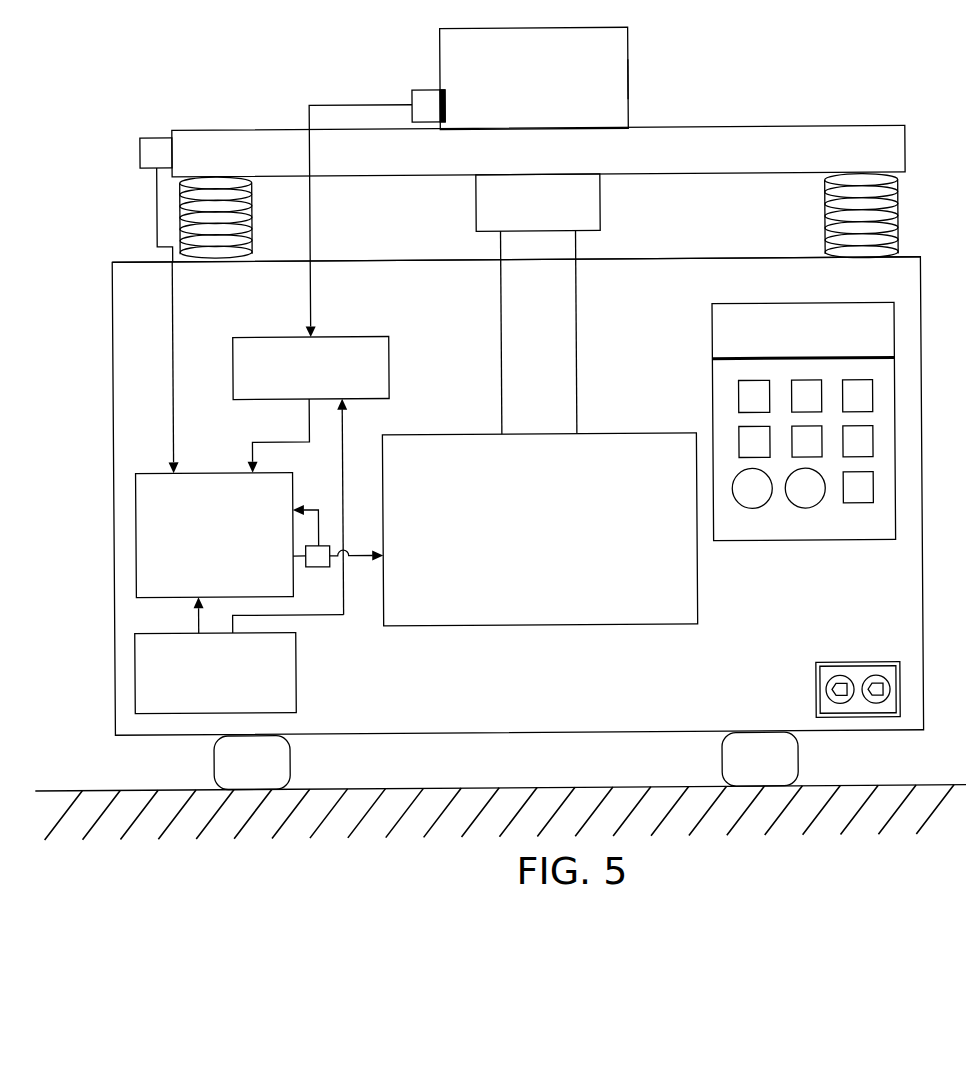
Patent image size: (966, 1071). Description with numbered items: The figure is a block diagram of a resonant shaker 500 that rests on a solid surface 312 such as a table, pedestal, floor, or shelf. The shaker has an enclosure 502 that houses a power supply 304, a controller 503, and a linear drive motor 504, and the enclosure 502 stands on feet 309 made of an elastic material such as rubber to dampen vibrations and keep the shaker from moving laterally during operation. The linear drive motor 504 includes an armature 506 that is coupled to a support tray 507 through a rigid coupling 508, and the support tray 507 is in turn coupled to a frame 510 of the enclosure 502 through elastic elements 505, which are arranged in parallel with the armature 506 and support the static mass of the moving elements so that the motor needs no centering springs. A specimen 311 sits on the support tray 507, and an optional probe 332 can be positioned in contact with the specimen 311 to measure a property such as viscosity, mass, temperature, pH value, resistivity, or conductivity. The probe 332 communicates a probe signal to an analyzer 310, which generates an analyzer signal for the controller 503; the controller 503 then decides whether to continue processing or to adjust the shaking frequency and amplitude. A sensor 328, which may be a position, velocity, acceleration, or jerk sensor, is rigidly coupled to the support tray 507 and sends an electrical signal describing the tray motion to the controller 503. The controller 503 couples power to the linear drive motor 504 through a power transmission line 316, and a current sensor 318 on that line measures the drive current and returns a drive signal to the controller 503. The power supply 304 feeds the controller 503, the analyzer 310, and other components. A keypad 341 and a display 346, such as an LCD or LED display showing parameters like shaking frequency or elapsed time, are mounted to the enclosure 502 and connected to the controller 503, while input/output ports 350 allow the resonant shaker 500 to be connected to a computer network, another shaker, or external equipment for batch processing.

The resonant shaker 500 is at (248, 80).
The specimen 311 is at (520, 103).
The solid surface 312 is at (630, 80).
The probe 332 is at (418, 89).
The sensor 328 is at (155, 136).
The support tray 507 is at (522, 161).
The rigid coupling 508 is at (602, 203).
The elastic elements 505 is at (254, 222).
The frame 510 is at (389, 257).
The enclosure 502 is at (113, 292).
The armature 506 is at (523, 316).
The linear drive motor 504 is at (524, 553).
The display 346 is at (789, 356).
The keypad 341 is at (713, 405).
The analyzer 310 is at (295, 390).
The controller 503 is at (198, 559).
The power supply 304 is at (199, 707).
The current sensor 318 is at (324, 566).
The power transmission line 316 is at (338, 541).
The input/output ports 350 is at (858, 664).
The feet 309 is at (234, 771).